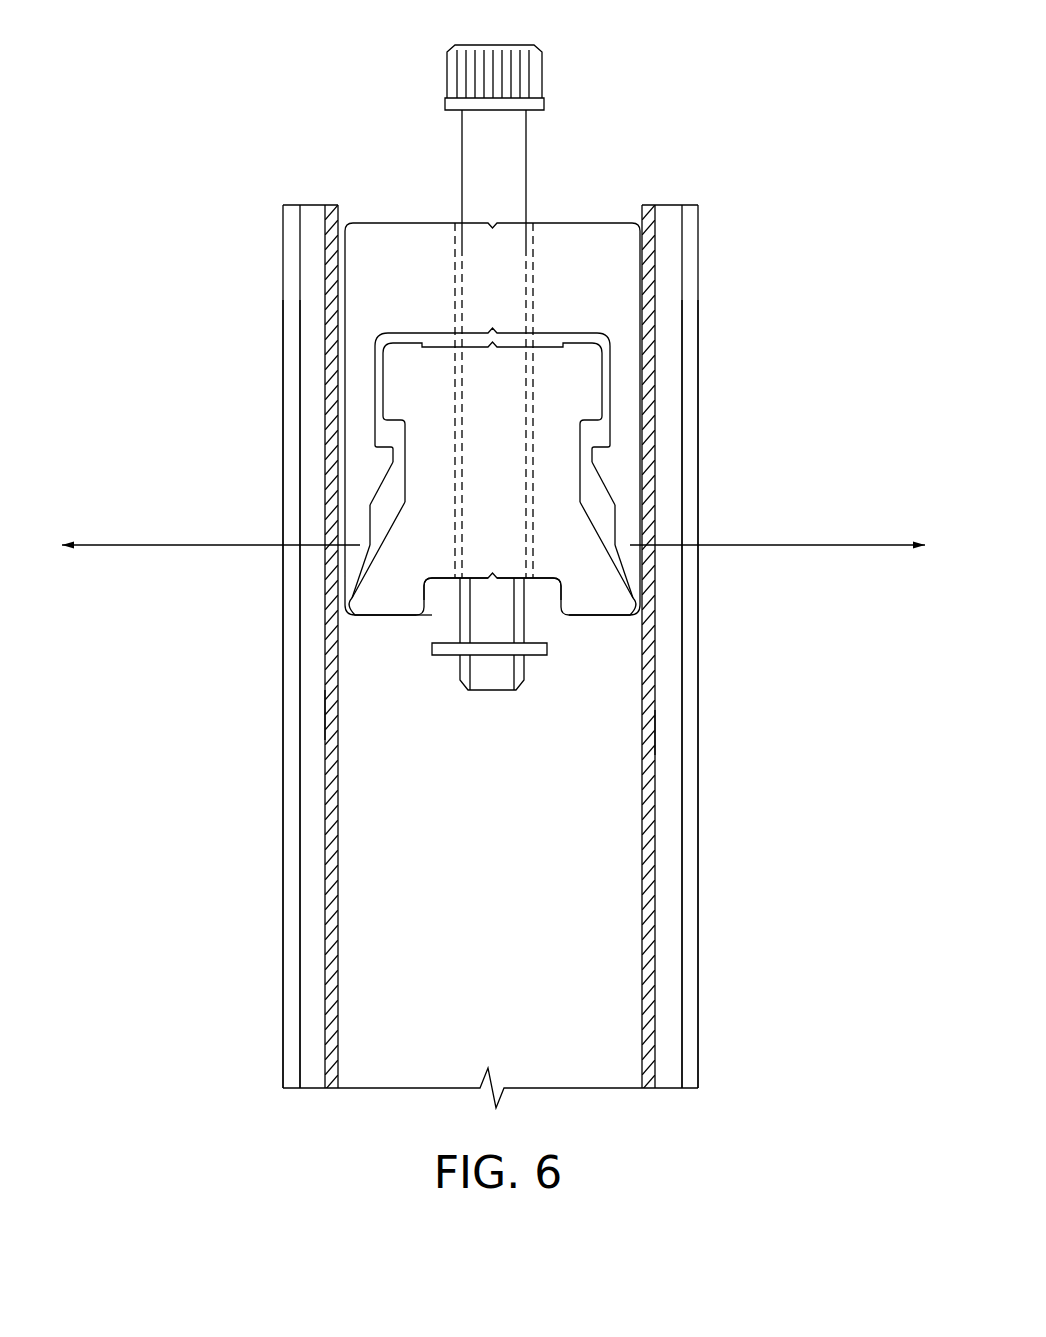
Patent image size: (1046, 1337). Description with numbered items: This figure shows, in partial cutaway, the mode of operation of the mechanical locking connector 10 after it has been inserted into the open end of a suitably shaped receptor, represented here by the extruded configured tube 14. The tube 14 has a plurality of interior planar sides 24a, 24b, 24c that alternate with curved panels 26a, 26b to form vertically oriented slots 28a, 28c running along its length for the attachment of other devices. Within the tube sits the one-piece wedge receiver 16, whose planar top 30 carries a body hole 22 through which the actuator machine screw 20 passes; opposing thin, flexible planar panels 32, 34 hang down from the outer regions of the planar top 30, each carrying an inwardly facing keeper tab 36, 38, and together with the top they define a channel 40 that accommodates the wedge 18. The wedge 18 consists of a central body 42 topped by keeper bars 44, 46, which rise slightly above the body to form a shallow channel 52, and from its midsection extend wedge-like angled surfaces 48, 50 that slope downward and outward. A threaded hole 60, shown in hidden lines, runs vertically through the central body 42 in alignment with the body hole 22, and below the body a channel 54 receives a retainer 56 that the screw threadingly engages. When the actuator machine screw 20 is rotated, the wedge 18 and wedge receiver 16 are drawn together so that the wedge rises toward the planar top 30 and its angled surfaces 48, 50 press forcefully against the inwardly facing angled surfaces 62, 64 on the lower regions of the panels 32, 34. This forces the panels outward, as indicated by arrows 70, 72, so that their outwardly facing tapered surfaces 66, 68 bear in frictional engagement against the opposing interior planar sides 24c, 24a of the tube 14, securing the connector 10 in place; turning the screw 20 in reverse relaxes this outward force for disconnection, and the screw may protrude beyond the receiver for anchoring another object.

The mechanical locking connector 10 is at (385, 128).
The configured tube 14 is at (247, 627).
The wedge receiver 16 is at (533, 389).
The wedge 18 is at (582, 498).
The actuator machine screw 20 is at (527, 165).
The body hole 22 is at (531, 252).
The interior planar side 24a is at (338, 724).
The interior planar side 24b is at (499, 899).
The interior planar side 24c is at (655, 745).
The curved panel 26a is at (288, 826).
The curved panel 26b is at (686, 826).
The vertically oriented slot 28a is at (316, 895).
The vertically oriented slot 28c is at (664, 895).
The planar top 30 is at (433, 222).
The planar panel 32 is at (502, 381).
The planar panel 34 is at (363, 423).
The keeper tab 36 is at (600, 463).
The keeper tab 38 is at (376, 465).
The channel 40 is at (596, 436).
The central body 42 is at (503, 471).
The keeper bar 44 is at (583, 393).
The keeper bar 46 is at (393, 397).
The angled surface 48 is at (604, 541).
The angled surface 50 is at (380, 543).
The shallow channel 52 is at (440, 343).
The channel 54 is at (443, 598).
The retainer 56 is at (483, 650).
The threaded hole 60 is at (436, 567).
The angled surface 62 is at (636, 590).
The angled surface 64 is at (356, 578).
The tapered surface 66 is at (625, 565).
The tapered surface 68 is at (350, 586).
The arrow 70 is at (832, 545).
The arrow 72 is at (172, 545).